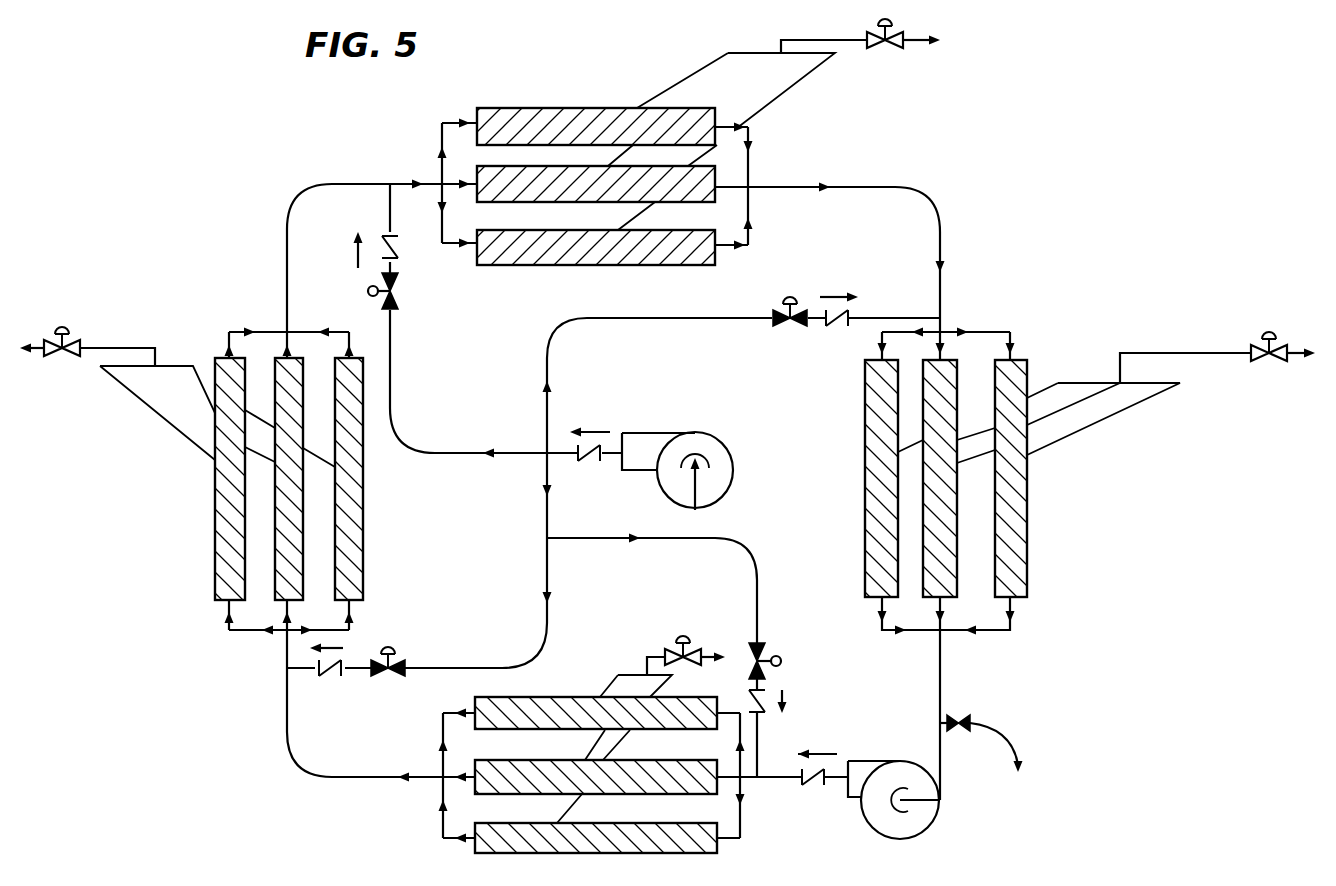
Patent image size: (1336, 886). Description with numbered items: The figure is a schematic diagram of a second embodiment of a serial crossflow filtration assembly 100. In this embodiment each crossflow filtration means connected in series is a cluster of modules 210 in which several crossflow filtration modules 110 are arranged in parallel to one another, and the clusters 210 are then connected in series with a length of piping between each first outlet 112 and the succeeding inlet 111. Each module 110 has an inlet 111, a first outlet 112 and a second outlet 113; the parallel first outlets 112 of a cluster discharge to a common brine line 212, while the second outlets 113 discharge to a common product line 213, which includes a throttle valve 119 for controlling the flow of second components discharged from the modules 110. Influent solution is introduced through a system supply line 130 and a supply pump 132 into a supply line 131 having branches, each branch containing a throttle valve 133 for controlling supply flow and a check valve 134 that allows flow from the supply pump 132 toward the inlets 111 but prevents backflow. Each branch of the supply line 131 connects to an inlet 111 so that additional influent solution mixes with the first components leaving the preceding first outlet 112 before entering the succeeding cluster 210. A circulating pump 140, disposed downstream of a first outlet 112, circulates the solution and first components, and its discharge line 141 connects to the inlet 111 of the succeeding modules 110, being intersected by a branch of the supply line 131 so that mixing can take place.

The crossflow filtration assembly 100 is at (122, 200).
The crossflow filtration module 110 is at (667, 243).
The inlet 111 is at (443, 178).
The first outlet 112 is at (718, 185).
The second outlet 113 is at (683, 82).
The throttle valve 119 is at (886, 50).
The system supply line 130 is at (697, 510).
The supply line 131 is at (547, 370).
The supply pump 132 is at (656, 412).
The throttle valve 133 is at (399, 291).
The check valve 134 is at (397, 238).
The circulating pump 140 is at (920, 820).
The discharge line 141 is at (826, 786).
The cluster of modules 210 is at (493, 92).
The brine line 212 is at (752, 180).
The product line 213 is at (781, 50).